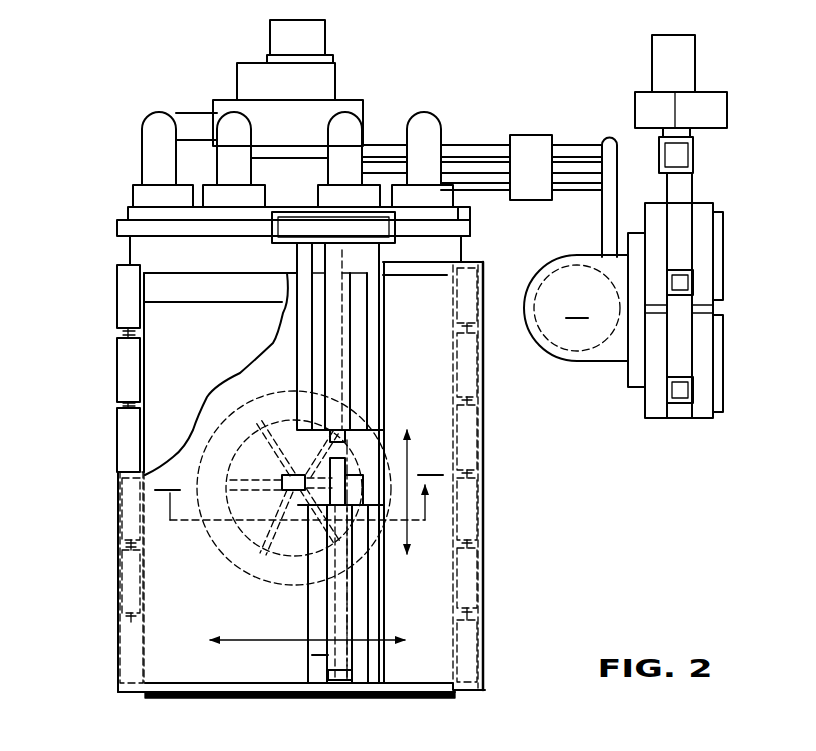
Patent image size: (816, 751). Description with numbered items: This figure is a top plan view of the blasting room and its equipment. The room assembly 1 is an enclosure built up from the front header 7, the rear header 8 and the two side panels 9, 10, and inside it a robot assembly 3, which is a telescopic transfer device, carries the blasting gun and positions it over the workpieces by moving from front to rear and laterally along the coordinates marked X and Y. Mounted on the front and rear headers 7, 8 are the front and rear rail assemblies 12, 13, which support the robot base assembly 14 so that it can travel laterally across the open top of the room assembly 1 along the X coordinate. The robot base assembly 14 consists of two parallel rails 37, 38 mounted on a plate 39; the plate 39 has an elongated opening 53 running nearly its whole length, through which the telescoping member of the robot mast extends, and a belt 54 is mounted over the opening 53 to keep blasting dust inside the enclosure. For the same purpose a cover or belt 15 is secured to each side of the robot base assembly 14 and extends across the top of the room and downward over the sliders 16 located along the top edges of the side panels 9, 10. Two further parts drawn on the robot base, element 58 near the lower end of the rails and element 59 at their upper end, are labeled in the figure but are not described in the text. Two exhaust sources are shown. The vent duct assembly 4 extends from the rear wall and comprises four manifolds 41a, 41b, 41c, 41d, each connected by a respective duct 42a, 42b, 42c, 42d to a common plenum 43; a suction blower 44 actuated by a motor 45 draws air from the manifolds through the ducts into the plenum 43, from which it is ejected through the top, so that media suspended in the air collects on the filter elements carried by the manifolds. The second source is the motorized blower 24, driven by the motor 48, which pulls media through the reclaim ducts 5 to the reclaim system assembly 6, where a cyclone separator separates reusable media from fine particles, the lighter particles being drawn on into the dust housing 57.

The room assembly 1 is at (492, 517).
The robot assembly 3 is at (355, 457).
The vent duct assembly 4 is at (412, 72).
The reclaim ducts 5 is at (607, 200).
The reclaim system assembly 6 is at (615, 410).
The front header 7 is at (225, 698).
The rear header 8 is at (462, 228).
The side panel 9 is at (485, 592).
The side panel 10 is at (117, 592).
The front rail assembly 12 is at (163, 690).
The rear rail assembly 13 is at (120, 236).
The robot base assembly 14 is at (293, 318).
The cover or belt 15 is at (168, 597).
The sliders 16 is at (118, 428).
The motorized blower 24 is at (715, 110).
The rail 37 is at (370, 363).
The rail 38 is at (304, 340).
The plate 39 is at (357, 333).
The manifold 41a is at (163, 196).
The manifold 41b is at (234, 196).
The manifold 41c is at (349, 196).
The manifold 41d is at (422, 196).
The duct 42a is at (148, 140).
The duct 42b is at (222, 122).
The duct 42c is at (345, 125).
The duct 42d is at (428, 127).
The plenum 43 is at (347, 100).
The suction blower 44 is at (242, 78).
The motor 45 is at (270, 35).
The motor 48 is at (683, 55).
The elongated opening 53 is at (343, 292).
The belt 54 is at (361, 463).
The dust housing 57 is at (700, 343).
The foot 58 is at (340, 668).
The bracket 59 is at (322, 245).